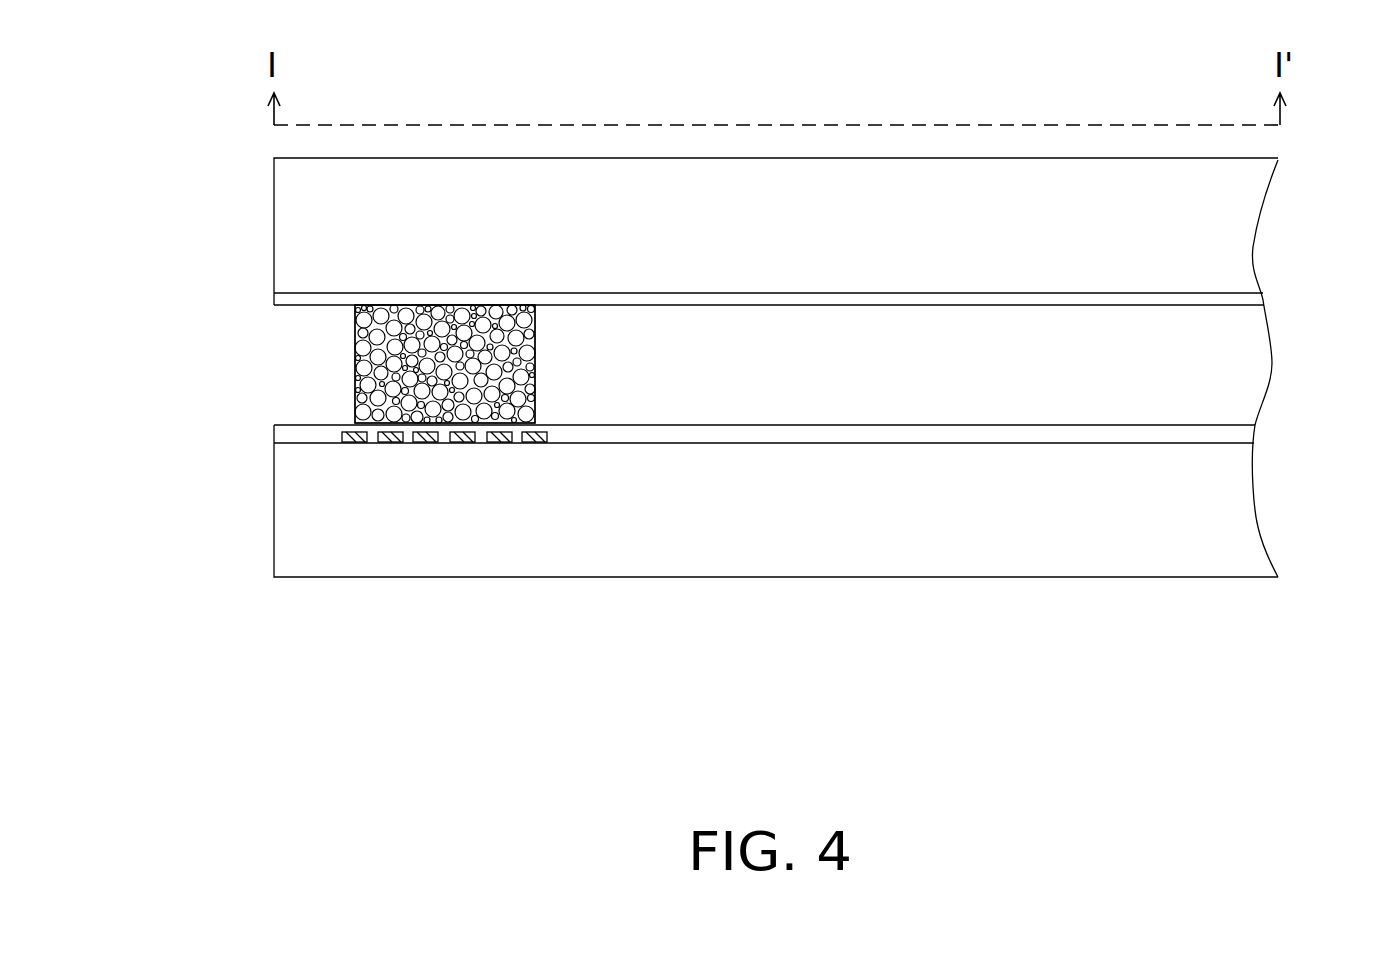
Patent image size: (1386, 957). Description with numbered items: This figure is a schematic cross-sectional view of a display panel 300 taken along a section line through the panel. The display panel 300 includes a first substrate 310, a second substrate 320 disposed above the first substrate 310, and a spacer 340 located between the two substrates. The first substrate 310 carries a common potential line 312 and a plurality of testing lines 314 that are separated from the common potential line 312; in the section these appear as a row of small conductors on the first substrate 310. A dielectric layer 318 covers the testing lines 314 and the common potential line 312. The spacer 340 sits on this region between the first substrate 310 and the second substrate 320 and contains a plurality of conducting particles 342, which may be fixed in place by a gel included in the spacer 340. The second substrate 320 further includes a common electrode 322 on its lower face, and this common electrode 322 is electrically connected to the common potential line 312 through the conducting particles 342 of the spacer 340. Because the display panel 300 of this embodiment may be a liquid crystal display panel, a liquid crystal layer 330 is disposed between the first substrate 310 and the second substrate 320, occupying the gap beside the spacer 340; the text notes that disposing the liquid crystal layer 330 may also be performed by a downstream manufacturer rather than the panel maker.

The display panel 300 is at (1292, 793).
The first substrate 310 is at (1235, 523).
The common potential line 312 is at (537, 443).
The testing line 314 is at (353, 443).
The dielectric layer 318 is at (1233, 435).
The second substrate 320 is at (1235, 205).
The common electrode 322 is at (1238, 294).
The liquid crystal layer 330 is at (1235, 360).
The spacer 340 is at (445, 364).
The conducting particle 342 is at (355, 335).